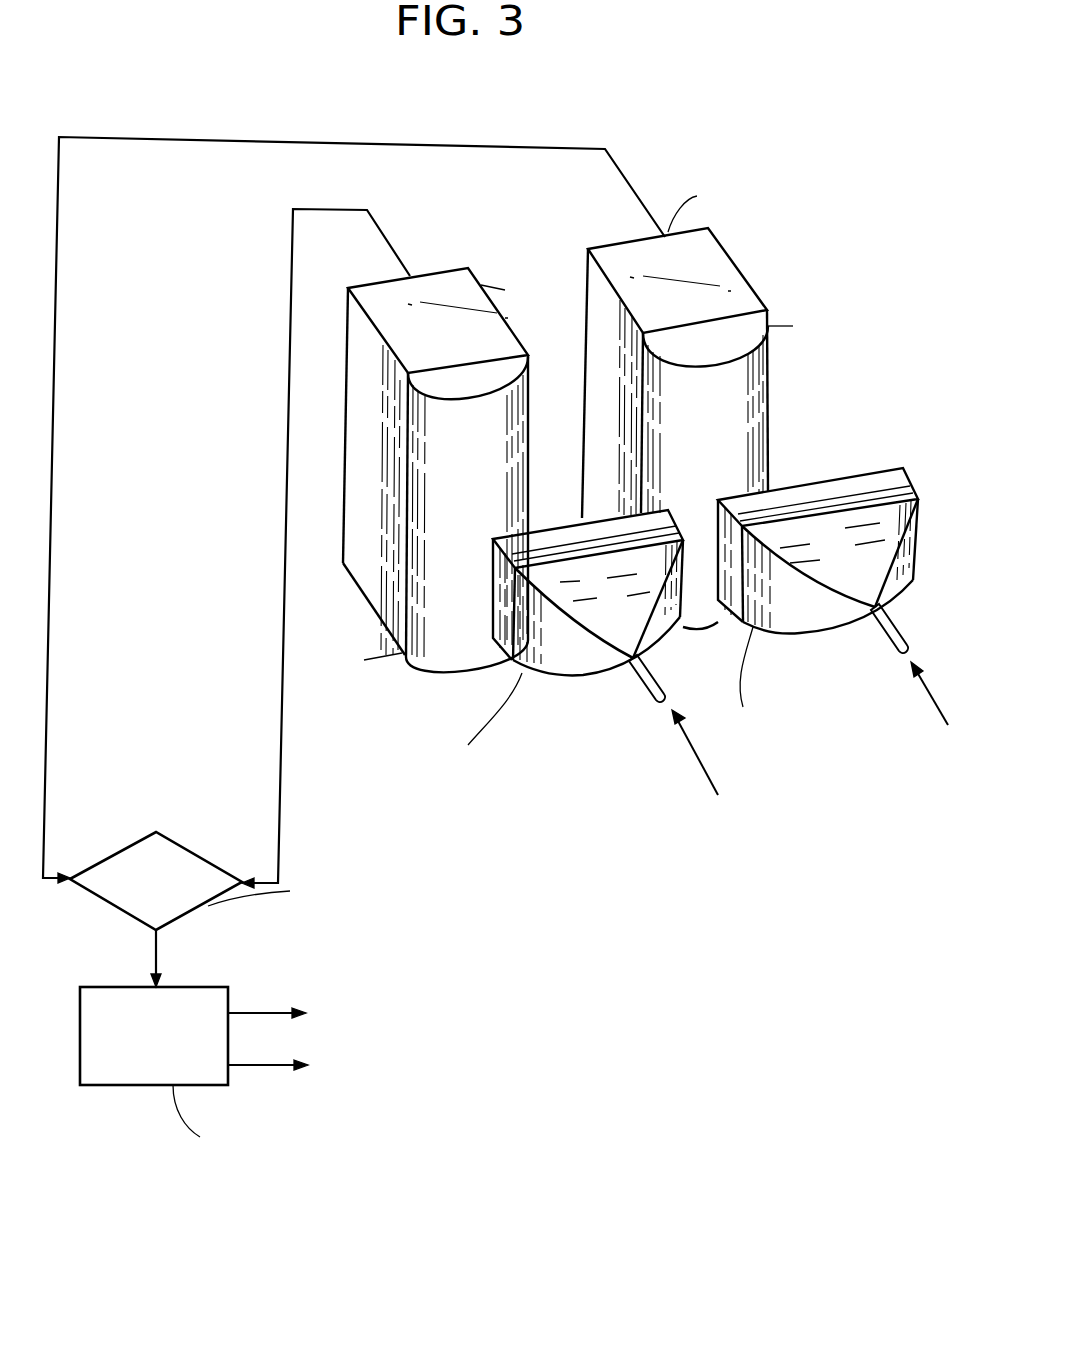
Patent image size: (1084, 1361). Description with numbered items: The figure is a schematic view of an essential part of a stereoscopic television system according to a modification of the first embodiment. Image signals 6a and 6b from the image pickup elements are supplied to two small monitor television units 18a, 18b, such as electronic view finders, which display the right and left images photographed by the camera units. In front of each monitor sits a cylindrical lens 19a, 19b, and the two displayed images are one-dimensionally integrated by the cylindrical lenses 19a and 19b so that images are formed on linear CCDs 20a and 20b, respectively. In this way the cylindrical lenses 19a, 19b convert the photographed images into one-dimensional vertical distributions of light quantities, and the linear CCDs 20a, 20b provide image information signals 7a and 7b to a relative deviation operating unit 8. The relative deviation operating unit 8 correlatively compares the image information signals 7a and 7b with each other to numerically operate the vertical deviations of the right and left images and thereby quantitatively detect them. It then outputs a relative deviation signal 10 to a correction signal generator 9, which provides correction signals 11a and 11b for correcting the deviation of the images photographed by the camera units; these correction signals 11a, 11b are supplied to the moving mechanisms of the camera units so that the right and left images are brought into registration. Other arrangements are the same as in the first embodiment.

The image signal 6a is at (708, 782).
The image signal 6b is at (933, 707).
The image information signal 7a is at (278, 840).
The image information signal 7b is at (43, 831).
The relative deviation operating unit 8 is at (180, 858).
The correction signal generator 9 is at (160, 1077).
The relative deviation signal 10 is at (156, 948).
The correction signal 11a is at (267, 1065).
The correction signal 11b is at (270, 985).
The monitor television unit 18a is at (568, 665).
The monitor television unit 18b is at (823, 620).
The cylindrical lens 19a is at (445, 652).
The cylindrical lens 19b is at (768, 436).
The linear CCD 20a is at (478, 283).
The linear CCD 20b is at (738, 275).